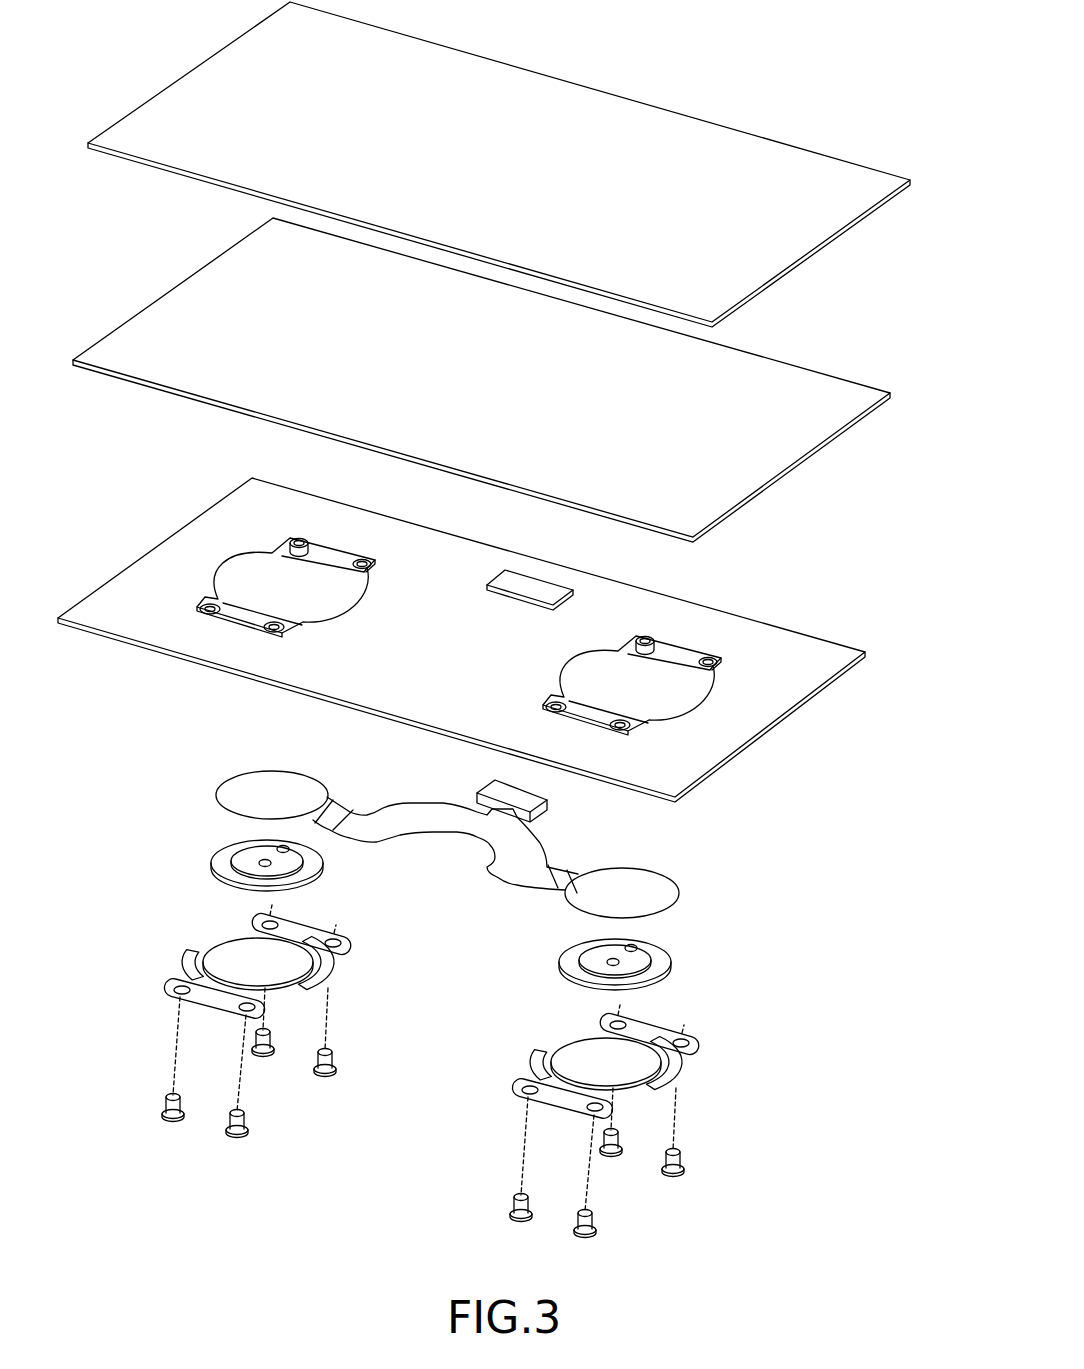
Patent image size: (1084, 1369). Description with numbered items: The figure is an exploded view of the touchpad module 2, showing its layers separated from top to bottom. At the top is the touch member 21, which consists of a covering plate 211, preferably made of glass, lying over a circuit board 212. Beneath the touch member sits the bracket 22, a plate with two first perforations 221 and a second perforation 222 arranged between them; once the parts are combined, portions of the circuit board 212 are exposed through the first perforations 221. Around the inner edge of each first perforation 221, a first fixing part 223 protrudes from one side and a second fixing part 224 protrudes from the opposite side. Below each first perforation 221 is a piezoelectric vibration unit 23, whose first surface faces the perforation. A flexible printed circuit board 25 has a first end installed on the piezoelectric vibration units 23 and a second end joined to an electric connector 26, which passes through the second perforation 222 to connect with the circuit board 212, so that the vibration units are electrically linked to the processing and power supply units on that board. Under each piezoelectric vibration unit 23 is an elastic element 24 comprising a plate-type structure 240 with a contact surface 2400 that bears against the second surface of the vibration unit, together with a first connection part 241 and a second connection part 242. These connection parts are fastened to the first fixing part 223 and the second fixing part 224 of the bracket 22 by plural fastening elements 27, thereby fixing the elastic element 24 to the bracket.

The touchpad module 2 is at (759, 50).
The touch member 21 is at (897, 240).
The covering plate 211 is at (787, 162).
The circuit board 212 is at (787, 380).
The bracket 22 is at (462, 640).
The first perforation 221 is at (263, 577).
The second perforation 222 is at (530, 587).
The first fixing part 223 is at (677, 663).
The second fixing part 224 is at (590, 717).
The piezoelectric vibration unit 23 is at (248, 857).
The elastic element 24 is at (788, 782).
The contact surface 2400 is at (598, 1052).
The plate-type structure 240 is at (575, 1062).
The first connection part 241 is at (663, 1033).
The second connection part 242 is at (553, 1100).
The flexible printed circuit board 25 is at (630, 888).
The electric connector 26 is at (513, 790).
The fastening element 27 is at (677, 1150).